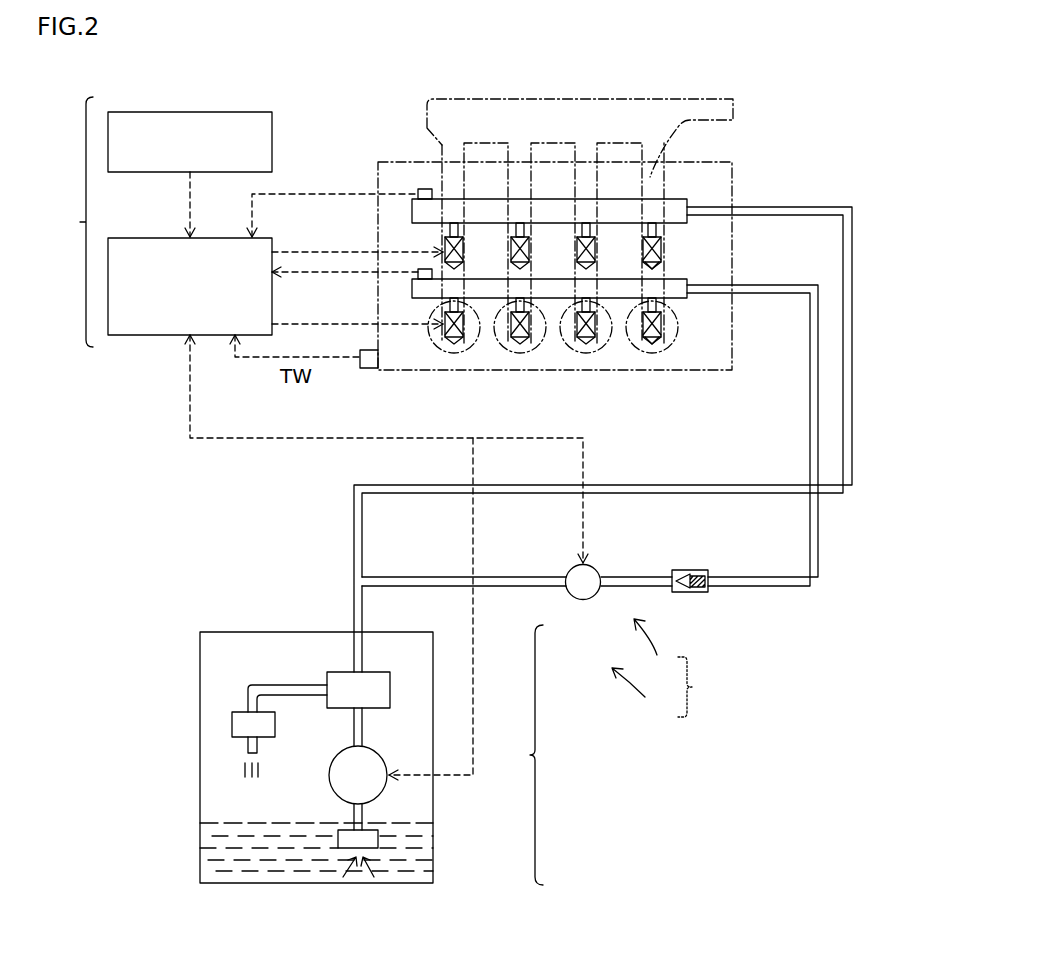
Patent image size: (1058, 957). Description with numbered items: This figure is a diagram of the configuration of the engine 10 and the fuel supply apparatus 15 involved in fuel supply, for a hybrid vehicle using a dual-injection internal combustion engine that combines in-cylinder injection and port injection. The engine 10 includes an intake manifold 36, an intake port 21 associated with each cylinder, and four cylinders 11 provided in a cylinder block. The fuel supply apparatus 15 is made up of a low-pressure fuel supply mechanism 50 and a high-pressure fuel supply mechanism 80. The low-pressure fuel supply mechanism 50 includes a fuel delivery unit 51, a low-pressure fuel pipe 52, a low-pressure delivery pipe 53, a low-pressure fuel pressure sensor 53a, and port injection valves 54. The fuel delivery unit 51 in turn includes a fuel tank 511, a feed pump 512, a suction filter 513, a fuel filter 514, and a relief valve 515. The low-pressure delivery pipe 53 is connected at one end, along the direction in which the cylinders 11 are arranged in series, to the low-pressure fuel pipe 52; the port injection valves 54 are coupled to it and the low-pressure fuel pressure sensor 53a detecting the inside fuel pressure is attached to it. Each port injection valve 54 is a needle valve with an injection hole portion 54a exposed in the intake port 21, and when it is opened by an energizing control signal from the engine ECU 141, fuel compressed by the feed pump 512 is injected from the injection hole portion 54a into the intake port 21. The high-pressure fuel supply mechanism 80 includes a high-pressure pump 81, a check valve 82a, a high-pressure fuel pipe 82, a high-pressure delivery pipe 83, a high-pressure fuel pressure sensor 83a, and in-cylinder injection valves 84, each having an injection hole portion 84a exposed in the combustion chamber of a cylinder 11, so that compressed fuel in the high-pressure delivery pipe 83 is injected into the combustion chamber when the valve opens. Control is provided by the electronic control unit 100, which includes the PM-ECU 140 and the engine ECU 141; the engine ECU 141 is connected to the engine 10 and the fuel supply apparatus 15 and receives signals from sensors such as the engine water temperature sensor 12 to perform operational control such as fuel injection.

The engine 10 is at (735, 172).
The cylinder 11 is at (637, 353).
The engine water temperature sensor 12 is at (369, 369).
The fuel supply apparatus 15 is at (700, 687).
The intake port 21 is at (665, 158).
The intake manifold 36 is at (560, 99).
The low-pressure fuel supply mechanism 50 is at (643, 692).
The fuel delivery unit 51 is at (554, 755).
The low-pressure fuel pipe 52 is at (670, 485).
The low-pressure delivery pipe 53 is at (686, 198).
The low-pressure fuel pressure sensor 53a is at (424, 188).
The port injection valve 54 is at (666, 250).
The injection hole portion 54a is at (643, 277).
The high-pressure fuel supply mechanism 80 is at (654, 651).
The high-pressure pump 81 is at (600, 568).
The high-pressure fuel pipe 82 is at (767, 577).
The check valve 82a is at (688, 570).
The high-pressure delivery pipe 83 is at (686, 279).
The high-pressure fuel pressure sensor 83a is at (424, 268).
The in-cylinder injection valve 84 is at (662, 323).
The injection hole portion 84a is at (651, 346).
The electronic control unit 100 is at (66, 222).
The power management electronic control unit 140 is at (216, 112).
The engine electronic control unit 141 is at (133, 337).
The fuel tank 511 is at (222, 632).
The feed pump 512 is at (385, 795).
The suction filter 513 is at (378, 840).
The fuel filter 514 is at (390, 690).
The relief valve 515 is at (232, 724).